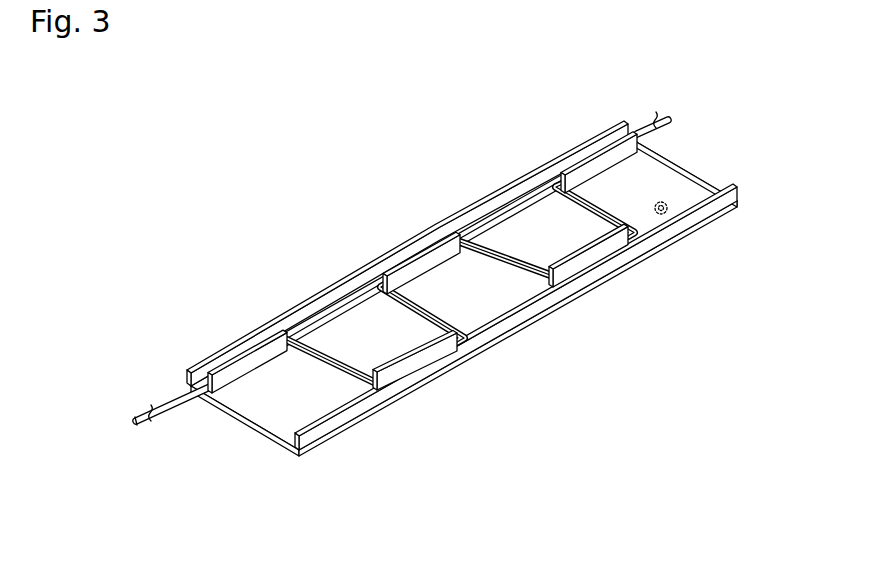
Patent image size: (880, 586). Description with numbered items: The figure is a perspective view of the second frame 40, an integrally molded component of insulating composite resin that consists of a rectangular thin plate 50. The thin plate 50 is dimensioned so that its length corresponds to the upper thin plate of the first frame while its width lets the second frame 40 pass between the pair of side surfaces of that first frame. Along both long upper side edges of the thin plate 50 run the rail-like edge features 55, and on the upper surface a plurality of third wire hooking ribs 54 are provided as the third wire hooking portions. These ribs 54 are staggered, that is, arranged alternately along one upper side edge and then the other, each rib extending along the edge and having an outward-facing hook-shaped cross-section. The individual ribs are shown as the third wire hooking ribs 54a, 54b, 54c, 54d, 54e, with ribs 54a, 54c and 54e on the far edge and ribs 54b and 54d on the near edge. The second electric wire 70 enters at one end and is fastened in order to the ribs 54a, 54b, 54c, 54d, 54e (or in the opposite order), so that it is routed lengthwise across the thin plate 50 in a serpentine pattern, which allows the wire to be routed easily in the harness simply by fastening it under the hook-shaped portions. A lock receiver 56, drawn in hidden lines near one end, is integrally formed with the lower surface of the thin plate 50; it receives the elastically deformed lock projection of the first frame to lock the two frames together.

The second frame 40 is at (337, 203).
The thin plate 50 is at (265, 423).
The third wire hooking ribs 54 is at (240, 403).
The third wire hooking rib 54a is at (257, 362).
The third wire hooking rib 54b is at (430, 353).
The third wire hooking rib 54c is at (430, 264).
The third wire hooking rib 54d is at (602, 250).
The third wire hooking rib 54e is at (600, 165).
The side rail 55 is at (513, 194).
The lock receiver 56 is at (664, 202).
The second electric wire 70 is at (166, 406).